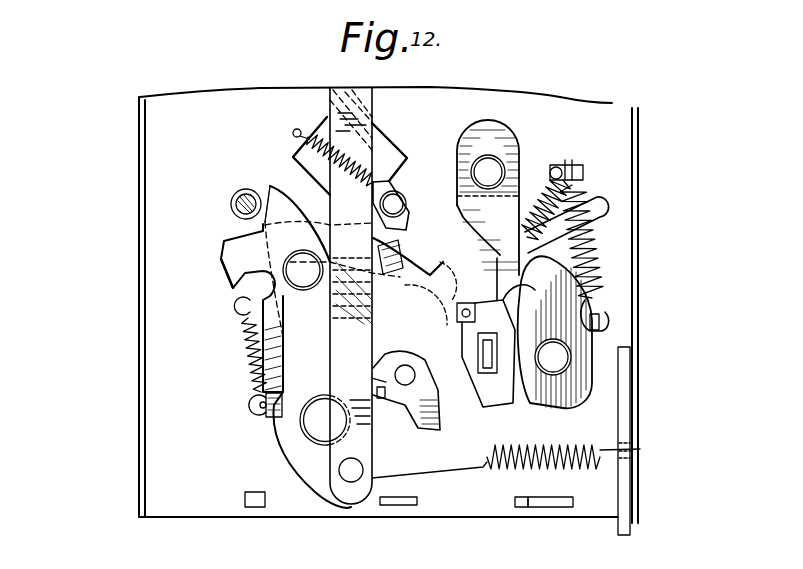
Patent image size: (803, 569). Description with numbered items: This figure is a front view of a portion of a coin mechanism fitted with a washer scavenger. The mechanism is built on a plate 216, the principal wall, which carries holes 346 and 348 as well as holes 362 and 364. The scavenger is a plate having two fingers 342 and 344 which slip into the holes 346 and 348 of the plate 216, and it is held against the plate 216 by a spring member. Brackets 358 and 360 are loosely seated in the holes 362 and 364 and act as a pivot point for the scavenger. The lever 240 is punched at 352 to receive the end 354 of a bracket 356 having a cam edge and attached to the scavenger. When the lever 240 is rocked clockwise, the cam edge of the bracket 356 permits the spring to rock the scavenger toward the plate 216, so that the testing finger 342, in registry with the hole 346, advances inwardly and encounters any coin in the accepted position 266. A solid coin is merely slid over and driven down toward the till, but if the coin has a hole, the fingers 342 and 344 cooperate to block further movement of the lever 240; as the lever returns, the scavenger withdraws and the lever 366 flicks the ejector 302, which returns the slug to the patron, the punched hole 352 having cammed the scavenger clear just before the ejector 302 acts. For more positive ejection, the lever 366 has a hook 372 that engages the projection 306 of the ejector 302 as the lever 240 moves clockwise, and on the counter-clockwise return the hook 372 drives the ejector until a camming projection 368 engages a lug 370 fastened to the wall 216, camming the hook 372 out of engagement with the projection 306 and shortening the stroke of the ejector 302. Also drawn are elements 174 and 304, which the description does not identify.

The stop 174 is at (438, 427).
The plate 216 is at (625, 143).
The lever 240 is at (285, 435).
The accepted position 266 is at (437, 330).
The ejector 302 is at (501, 205).
The cam 304 is at (563, 284).
The projection 306 is at (495, 258).
The testing finger 342 is at (466, 322).
The finger 344 is at (505, 362).
The hole 346 is at (458, 262).
The hole 348 is at (488, 367).
The punched hole 352 is at (376, 388).
The end 354 is at (378, 392).
The bracket 356 is at (378, 386).
The bracket 358 is at (551, 507).
The bracket 360 is at (393, 505).
The hole 362 is at (522, 507).
The hole 364 is at (373, 512).
The lever 366 is at (272, 308).
The camming projection 368 is at (269, 190).
The lug 370 is at (231, 201).
The hook 372 is at (444, 272).